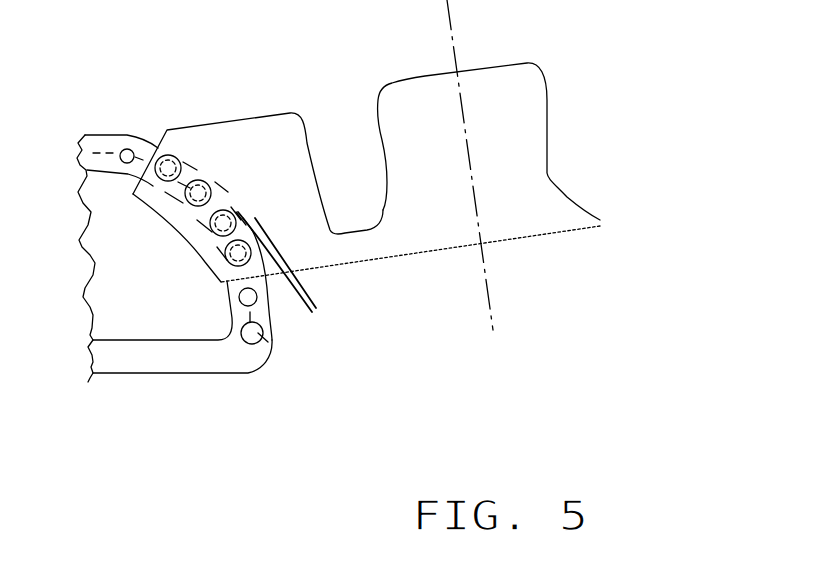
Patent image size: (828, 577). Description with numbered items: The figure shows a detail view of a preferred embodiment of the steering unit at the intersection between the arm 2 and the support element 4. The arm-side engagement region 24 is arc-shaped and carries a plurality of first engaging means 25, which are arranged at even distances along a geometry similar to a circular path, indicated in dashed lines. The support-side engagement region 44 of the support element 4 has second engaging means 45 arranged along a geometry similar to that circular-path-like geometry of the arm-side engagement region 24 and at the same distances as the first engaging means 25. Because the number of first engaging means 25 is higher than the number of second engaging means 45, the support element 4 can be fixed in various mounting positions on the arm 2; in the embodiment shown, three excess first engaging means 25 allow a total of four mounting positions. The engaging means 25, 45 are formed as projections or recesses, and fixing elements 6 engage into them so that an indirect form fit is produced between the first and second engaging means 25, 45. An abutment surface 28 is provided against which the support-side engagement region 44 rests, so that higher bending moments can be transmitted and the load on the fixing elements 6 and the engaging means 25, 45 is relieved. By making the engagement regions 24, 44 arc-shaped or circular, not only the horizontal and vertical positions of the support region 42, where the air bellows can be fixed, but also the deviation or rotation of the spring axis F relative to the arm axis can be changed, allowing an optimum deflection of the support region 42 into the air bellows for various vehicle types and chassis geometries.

The arm 2 is at (217, 383).
The support element 4 is at (555, 245).
The fixing element 6 is at (291, 284).
The arm-side engagement region 24 is at (175, 363).
The first engaging means 25 is at (130, 137).
The abutment surface 28 is at (247, 212).
The support region 42 is at (527, 177).
The support-side engagement region 44 is at (263, 137).
The second engaging means 45 is at (209, 207).
The spring axis F is at (497, 306).